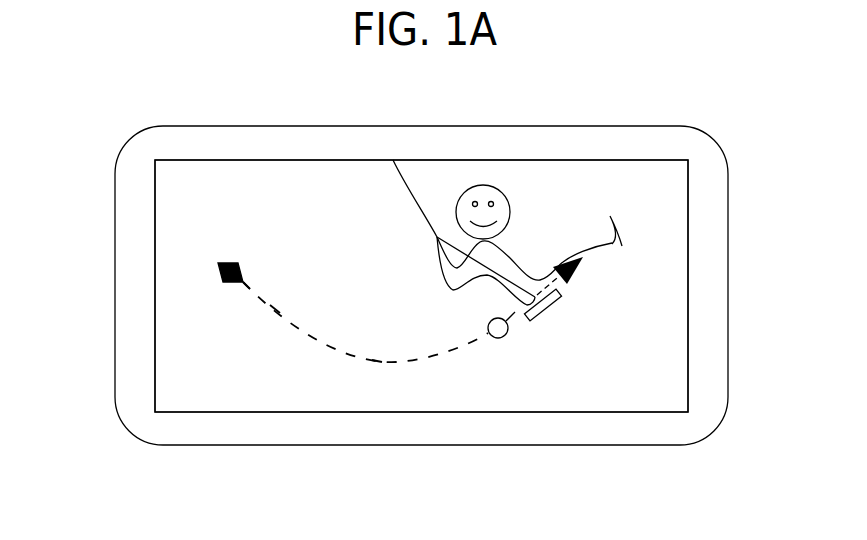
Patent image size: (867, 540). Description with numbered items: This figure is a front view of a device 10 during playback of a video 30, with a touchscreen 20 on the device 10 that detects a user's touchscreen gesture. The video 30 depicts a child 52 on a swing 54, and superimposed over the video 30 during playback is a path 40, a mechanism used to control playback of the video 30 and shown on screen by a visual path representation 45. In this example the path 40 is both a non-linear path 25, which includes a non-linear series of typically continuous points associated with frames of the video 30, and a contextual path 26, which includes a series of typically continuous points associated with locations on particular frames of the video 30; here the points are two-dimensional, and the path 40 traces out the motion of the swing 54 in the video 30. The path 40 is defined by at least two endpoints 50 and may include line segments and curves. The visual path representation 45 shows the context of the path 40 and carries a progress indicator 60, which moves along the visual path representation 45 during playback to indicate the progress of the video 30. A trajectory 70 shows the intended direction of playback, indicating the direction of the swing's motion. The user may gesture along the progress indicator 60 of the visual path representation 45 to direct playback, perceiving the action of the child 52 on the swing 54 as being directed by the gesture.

The device 10 is at (92, 178).
The touchscreen 20 is at (626, 177).
The video 30 is at (233, 177).
The non-linear path 25 is at (244, 286).
The contextual path 26 is at (277, 306).
The path 40 is at (312, 332).
The visual path representation 45 is at (377, 360).
The endpoints 50 is at (217, 268).
The child 52 is at (477, 186).
The swing 54 is at (408, 177).
The progress indicator 60 is at (494, 338).
The trajectory 70 is at (612, 244).